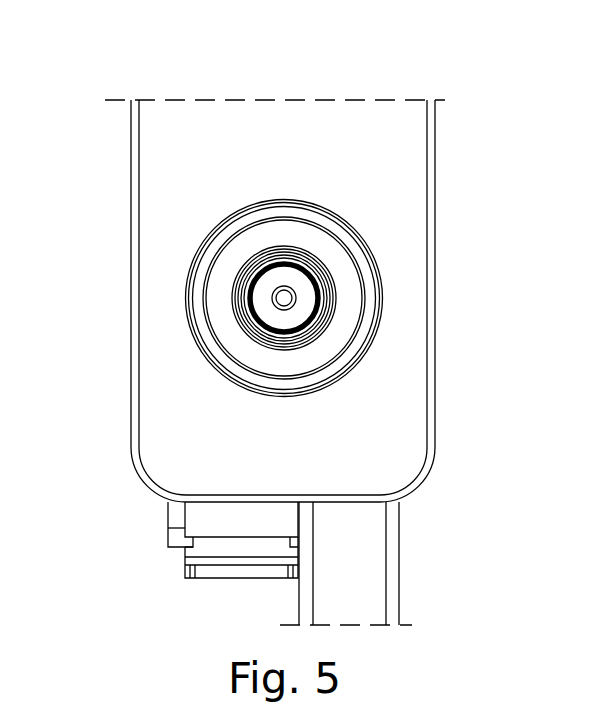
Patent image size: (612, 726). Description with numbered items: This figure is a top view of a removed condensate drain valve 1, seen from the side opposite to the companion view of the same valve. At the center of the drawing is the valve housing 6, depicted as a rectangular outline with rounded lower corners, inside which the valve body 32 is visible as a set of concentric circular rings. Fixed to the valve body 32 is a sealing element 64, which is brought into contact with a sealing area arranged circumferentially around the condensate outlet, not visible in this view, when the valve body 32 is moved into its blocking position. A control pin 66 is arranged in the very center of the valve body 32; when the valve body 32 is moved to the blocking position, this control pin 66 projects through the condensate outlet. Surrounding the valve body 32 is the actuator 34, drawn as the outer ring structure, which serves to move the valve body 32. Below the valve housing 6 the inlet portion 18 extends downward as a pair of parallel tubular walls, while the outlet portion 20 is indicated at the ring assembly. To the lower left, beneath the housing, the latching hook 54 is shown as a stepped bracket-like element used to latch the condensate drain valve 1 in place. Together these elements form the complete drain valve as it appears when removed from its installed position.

The condensate drain valve 1 is at (378, 100).
The valve housing 6 is at (435, 180).
The inlet portion 18 is at (358, 548).
The outlet portion 20 is at (350, 365).
The valve body 32 is at (235, 320).
The actuator 34 is at (205, 255).
The latching hook 54 is at (168, 528).
The sealing element 64 is at (322, 312).
The control pin 66 is at (293, 296).